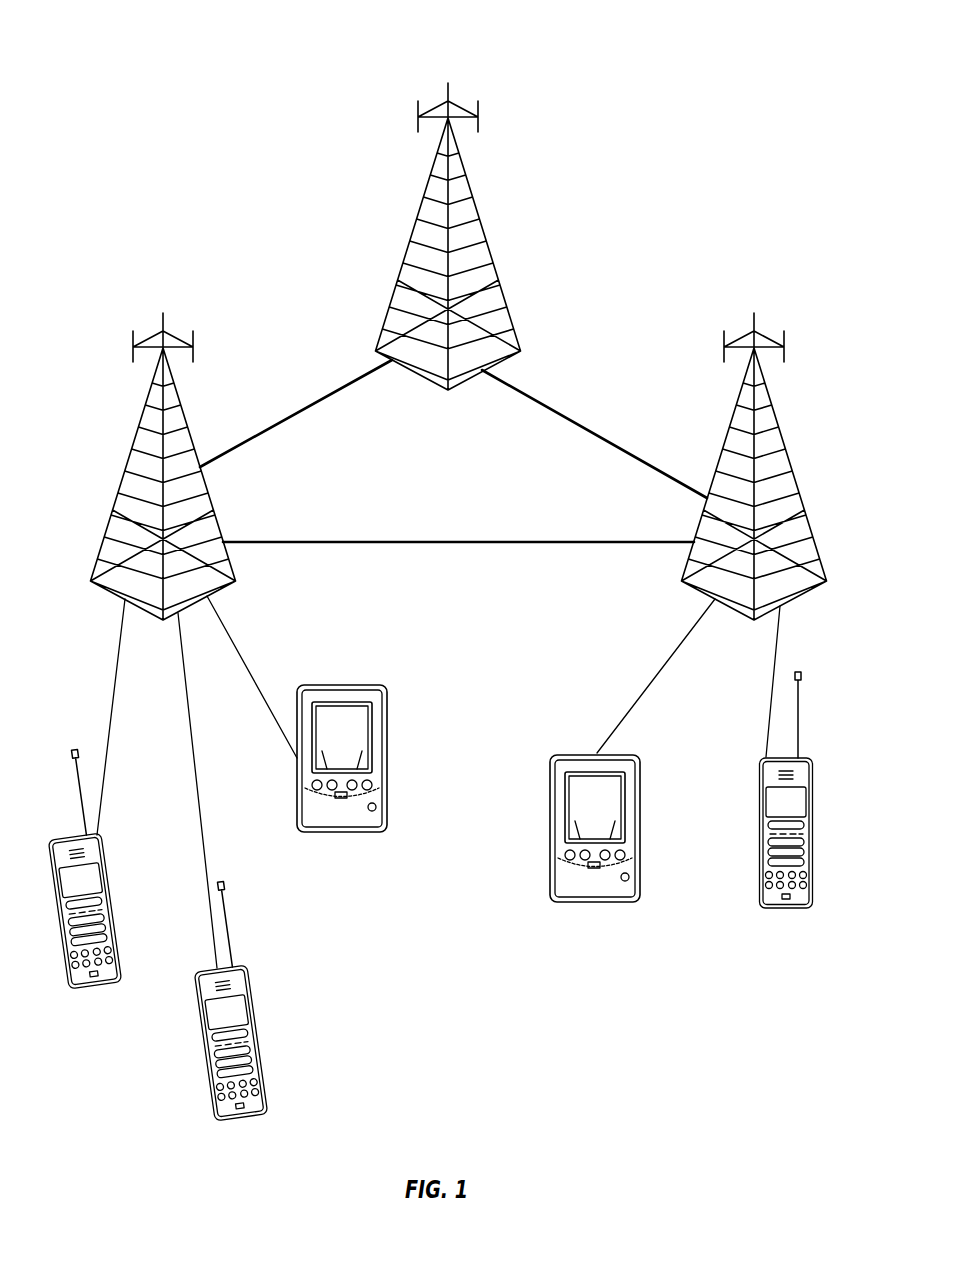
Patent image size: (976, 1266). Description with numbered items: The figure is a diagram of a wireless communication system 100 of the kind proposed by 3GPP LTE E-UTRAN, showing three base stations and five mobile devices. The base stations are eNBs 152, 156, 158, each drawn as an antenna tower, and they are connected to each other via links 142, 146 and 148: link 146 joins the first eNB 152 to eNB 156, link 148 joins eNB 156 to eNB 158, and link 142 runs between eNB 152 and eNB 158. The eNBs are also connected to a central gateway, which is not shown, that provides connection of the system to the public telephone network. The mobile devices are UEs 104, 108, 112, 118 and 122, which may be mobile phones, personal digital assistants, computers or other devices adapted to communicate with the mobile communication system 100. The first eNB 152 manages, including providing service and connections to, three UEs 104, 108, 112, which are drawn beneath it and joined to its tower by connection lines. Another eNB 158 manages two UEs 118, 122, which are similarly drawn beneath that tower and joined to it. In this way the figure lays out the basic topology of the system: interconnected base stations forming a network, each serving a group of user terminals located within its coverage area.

The wireless communication system 100 is at (138, 49).
The UE 104 is at (110, 900).
The UE 108 is at (248, 1007).
The UE 112 is at (297, 793).
The UE 118 is at (550, 793).
The UE 122 is at (757, 835).
The link 142 is at (403, 541).
The link 146 is at (312, 404).
The link 148 is at (595, 430).
The eNB 152 is at (158, 333).
The eNB 156 is at (442, 103).
The eNB 158 is at (748, 333).